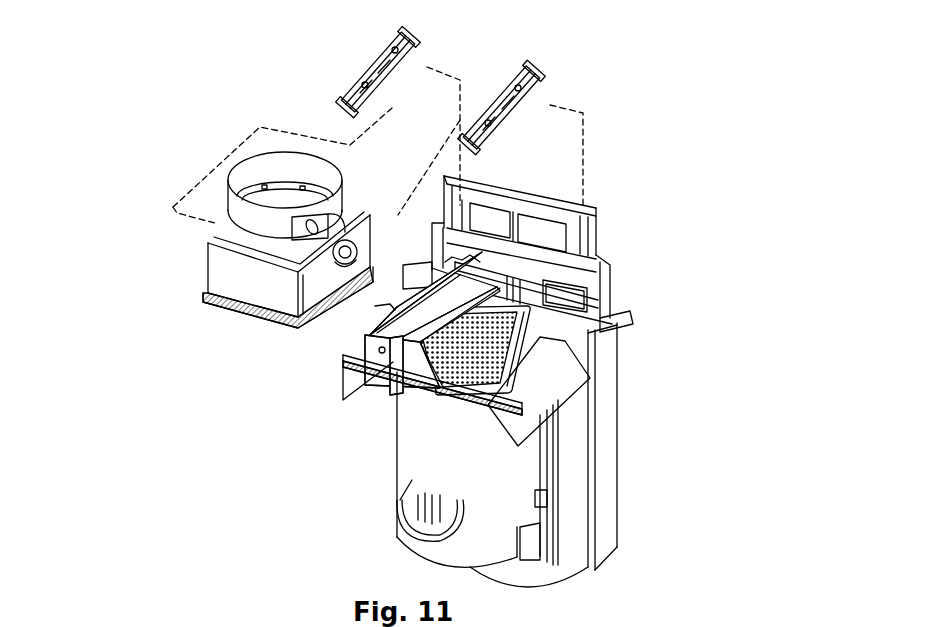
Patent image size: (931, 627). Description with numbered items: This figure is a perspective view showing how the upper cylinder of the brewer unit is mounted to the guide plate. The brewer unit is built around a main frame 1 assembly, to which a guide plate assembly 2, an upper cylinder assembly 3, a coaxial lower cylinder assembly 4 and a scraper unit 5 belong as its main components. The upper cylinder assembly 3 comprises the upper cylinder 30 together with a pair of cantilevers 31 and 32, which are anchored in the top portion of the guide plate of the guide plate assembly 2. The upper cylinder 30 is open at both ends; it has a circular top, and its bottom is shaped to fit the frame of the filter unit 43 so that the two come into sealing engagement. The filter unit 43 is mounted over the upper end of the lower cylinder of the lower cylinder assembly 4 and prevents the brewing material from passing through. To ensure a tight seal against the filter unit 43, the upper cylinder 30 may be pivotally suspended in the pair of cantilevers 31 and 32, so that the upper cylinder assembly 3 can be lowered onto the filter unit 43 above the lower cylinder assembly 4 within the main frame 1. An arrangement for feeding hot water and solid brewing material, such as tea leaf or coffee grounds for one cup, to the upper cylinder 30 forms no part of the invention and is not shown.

The main frame 1 is at (632, 387).
The guide plate assembly 2 is at (613, 205).
The upper cylinder assembly 3 is at (196, 272).
The lower cylinder assembly 4 is at (383, 463).
The scraper unit 5 is at (386, 309).
The upper cylinder 30 is at (252, 166).
The cantilever 31 is at (370, 63).
The cantilever 32 is at (497, 105).
The filter unit 43 is at (552, 345).